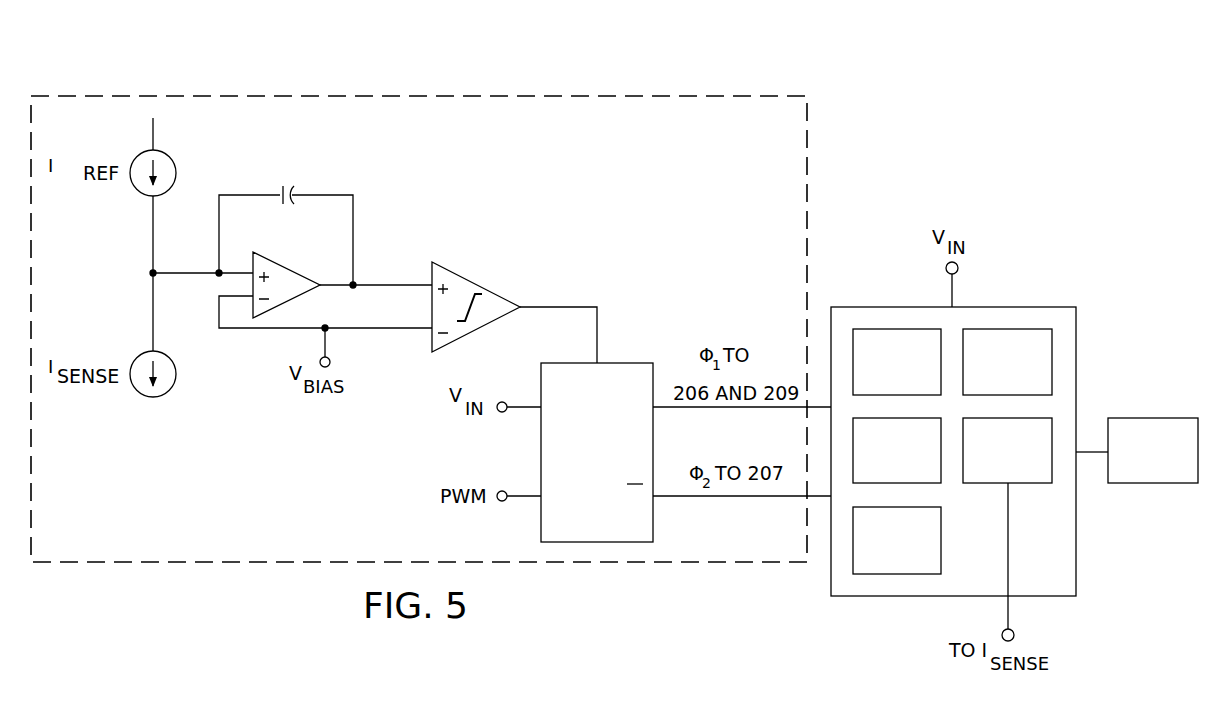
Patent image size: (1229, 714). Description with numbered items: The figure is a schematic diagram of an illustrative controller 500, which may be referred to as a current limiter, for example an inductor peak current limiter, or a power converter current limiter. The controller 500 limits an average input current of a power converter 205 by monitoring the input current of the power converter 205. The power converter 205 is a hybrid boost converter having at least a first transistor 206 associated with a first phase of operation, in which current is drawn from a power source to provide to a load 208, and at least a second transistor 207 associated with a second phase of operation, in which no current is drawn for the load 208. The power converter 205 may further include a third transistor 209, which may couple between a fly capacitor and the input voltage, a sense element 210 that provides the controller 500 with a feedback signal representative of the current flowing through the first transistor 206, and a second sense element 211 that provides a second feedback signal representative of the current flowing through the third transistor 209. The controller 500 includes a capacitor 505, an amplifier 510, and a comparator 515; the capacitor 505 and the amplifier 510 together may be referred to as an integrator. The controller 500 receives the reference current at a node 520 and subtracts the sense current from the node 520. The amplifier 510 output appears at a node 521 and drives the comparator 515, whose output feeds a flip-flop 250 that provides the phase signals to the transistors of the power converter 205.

The controller 500 is at (272, 94).
The capacitor 505 is at (287, 186).
The amplifier 510 is at (285, 263).
The comparator 515 is at (473, 285).
The node 520 is at (148, 279).
The output node 521 is at (357, 280).
The flip-flop 250 is at (576, 467).
The power converter 205 is at (1013, 304).
The first transistor 206 is at (875, 378).
The second transistor 207 is at (875, 466).
The load 208 is at (1131, 466).
The third transistor 209 is at (985, 378).
The sense element 210 is at (985, 466).
The second sense element 211 is at (875, 556).